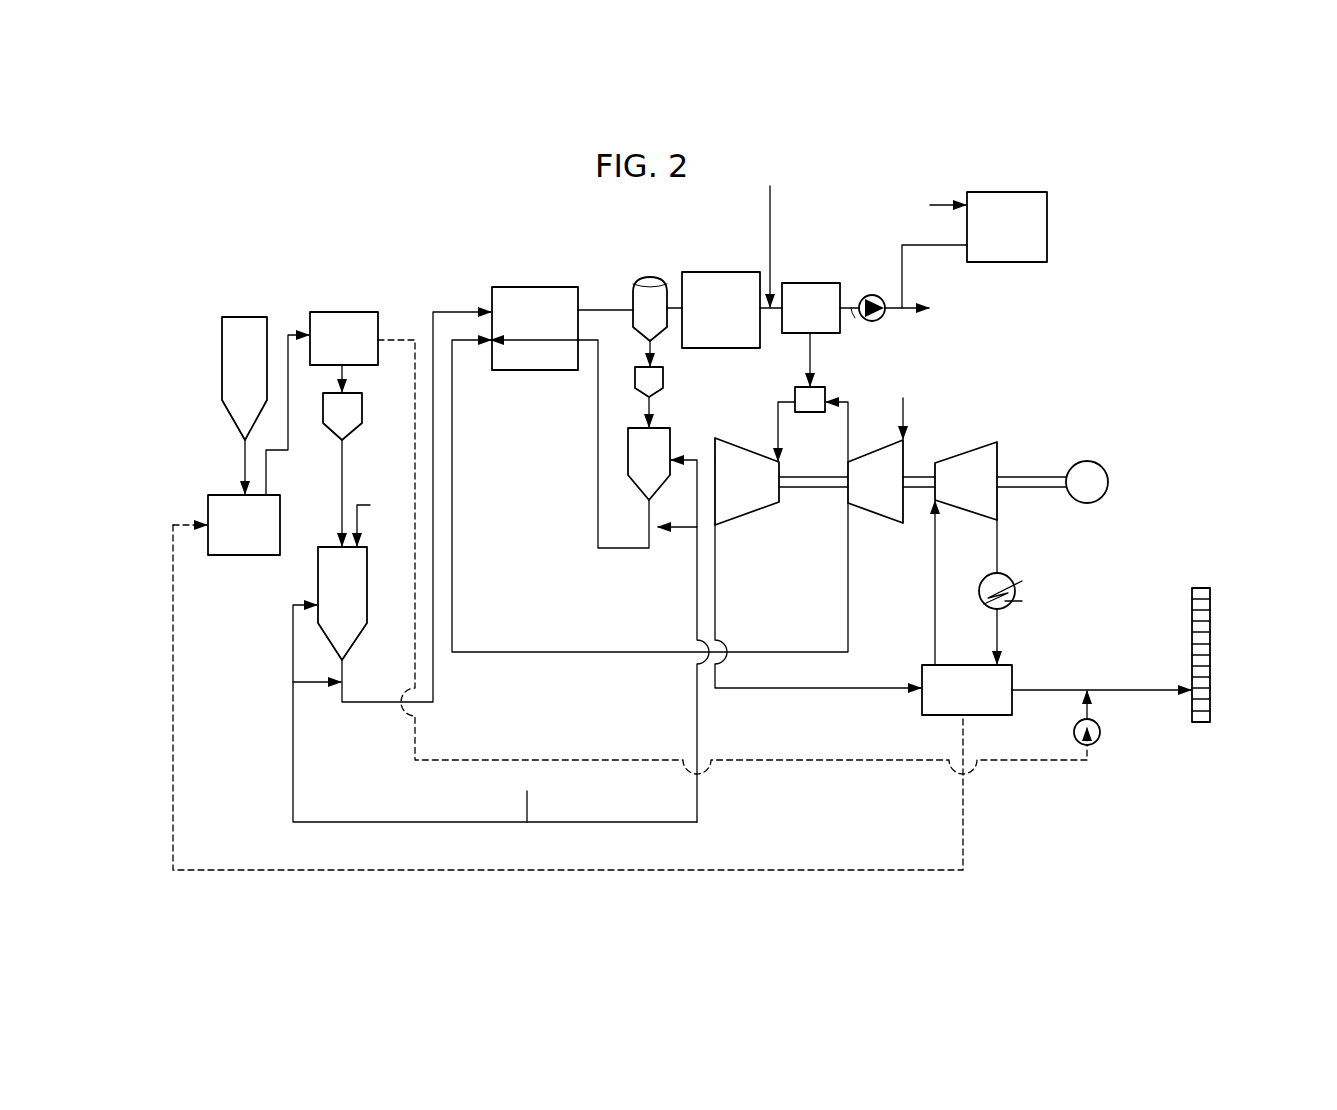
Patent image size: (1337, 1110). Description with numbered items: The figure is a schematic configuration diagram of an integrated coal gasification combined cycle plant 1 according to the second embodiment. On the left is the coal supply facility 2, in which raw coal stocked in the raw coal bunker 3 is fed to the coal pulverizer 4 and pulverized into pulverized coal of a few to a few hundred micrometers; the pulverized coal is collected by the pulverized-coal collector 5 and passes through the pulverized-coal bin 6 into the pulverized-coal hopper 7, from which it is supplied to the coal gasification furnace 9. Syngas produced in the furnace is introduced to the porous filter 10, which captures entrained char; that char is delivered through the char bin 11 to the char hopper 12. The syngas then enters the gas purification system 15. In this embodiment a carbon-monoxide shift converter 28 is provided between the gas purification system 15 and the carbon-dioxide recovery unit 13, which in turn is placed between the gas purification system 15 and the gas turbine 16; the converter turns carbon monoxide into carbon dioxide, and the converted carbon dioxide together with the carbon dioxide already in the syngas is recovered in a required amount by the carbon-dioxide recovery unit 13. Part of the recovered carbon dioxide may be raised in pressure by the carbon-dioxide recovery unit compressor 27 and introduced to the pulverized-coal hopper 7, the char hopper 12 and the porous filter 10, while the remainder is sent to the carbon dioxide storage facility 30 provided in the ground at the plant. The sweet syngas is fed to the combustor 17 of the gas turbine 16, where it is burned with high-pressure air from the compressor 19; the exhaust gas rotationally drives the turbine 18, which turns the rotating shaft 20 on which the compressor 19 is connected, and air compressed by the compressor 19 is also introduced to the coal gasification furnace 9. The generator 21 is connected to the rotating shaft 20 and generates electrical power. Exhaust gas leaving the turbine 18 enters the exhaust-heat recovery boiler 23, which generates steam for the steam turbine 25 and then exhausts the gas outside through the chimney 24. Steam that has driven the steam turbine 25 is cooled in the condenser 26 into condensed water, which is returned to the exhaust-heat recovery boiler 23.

The integrated coal gasification combined cycle plant 1 is at (236, 216).
The coal supply facility 2 is at (380, 294).
The raw coal bunker 3 is at (222, 350).
The coal pulverizer 4 is at (236, 555).
The pulverized-coal collector 5 is at (378, 320).
The pulverized-coal bin 6 is at (358, 430).
The pulverized-coal hopper 7 is at (357, 640).
The coal gasification furnace 9 is at (530, 287).
The porous filter 10 is at (650, 277).
The char bin 11 is at (663, 372).
The char hopper 12 is at (670, 435).
The carbon-dioxide recovery unit 13 is at (806, 283).
The gas purification system 15 is at (740, 272).
The gas turbine 16 is at (757, 532).
The combustor 17 is at (815, 387).
The turbine 18 is at (742, 448).
The compressor 19 is at (880, 449).
The rotating shaft 20 is at (800, 489).
The generator 21 is at (1087, 461).
The exhaust-heat recovery boiler 23 is at (958, 665).
The chimney 24 is at (1200, 588).
The steam turbine 25 is at (980, 447).
The condenser 26 is at (1010, 577).
The carbon-dioxide recovery unit compressor 27 is at (872, 295).
The carbon-monoxide shift converter 28 is at (772, 164).
The carbon dioxide storage facility 30 is at (1047, 228).